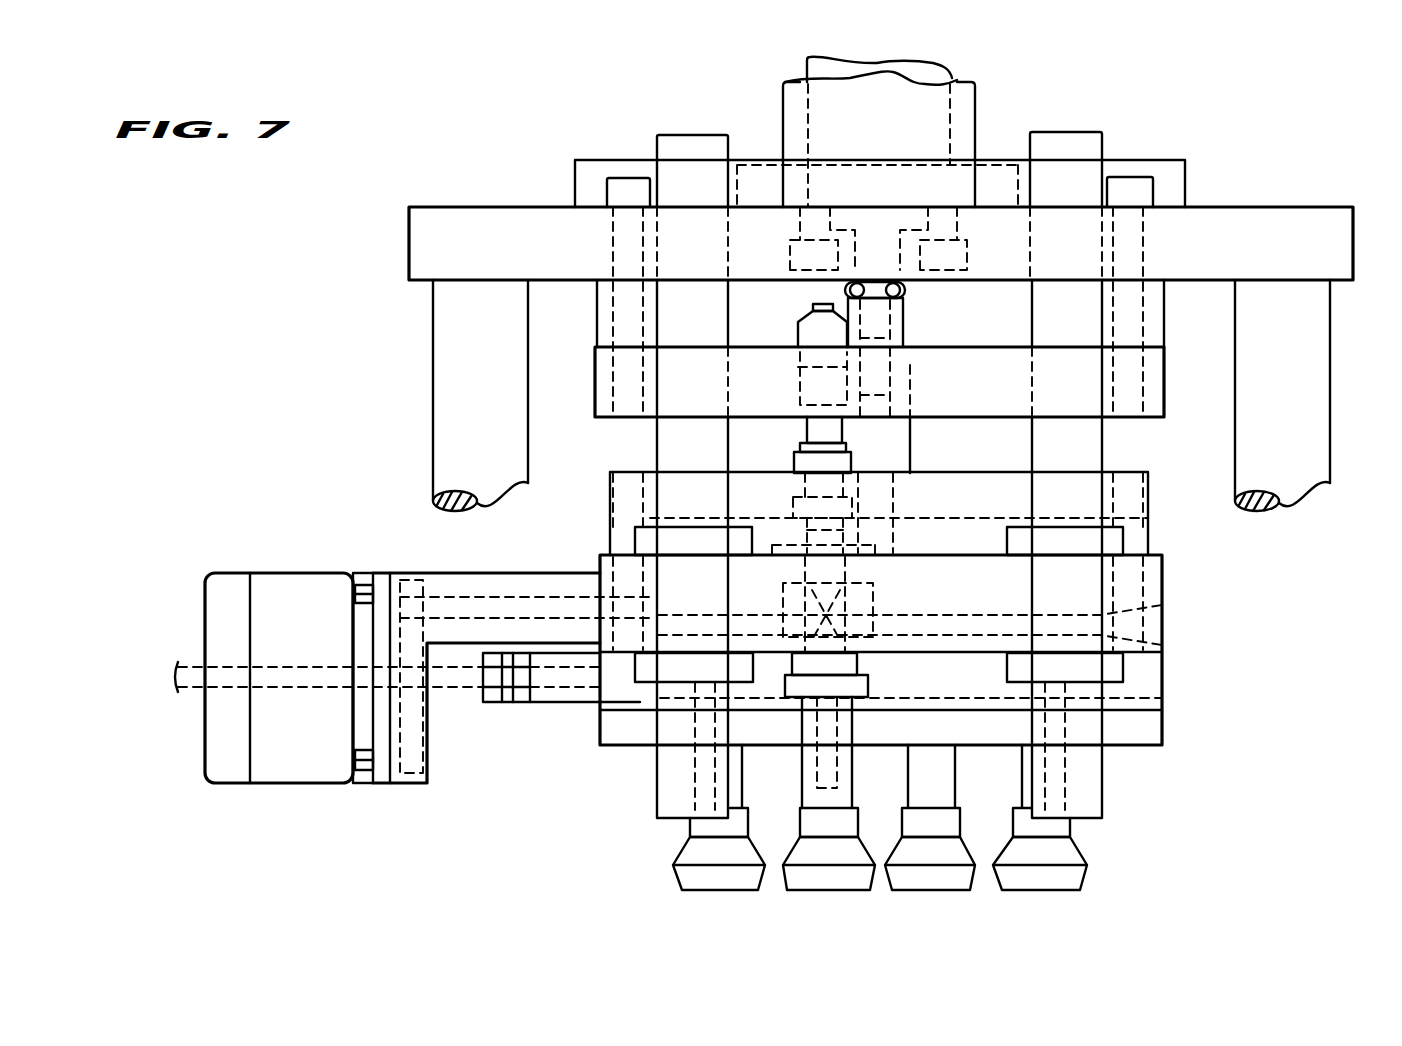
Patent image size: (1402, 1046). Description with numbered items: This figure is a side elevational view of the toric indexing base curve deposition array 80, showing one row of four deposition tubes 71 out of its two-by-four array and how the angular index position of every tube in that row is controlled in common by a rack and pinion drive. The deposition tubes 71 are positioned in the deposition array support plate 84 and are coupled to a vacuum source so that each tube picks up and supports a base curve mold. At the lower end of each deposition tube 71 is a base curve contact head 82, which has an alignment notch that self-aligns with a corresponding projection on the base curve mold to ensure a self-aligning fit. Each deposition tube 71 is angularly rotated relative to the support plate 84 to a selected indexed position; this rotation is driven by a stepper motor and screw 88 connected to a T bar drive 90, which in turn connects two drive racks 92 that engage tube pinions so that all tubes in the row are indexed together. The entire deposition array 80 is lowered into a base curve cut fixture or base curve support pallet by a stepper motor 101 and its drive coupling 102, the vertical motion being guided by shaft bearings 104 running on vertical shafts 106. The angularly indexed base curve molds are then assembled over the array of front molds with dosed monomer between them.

The deposition tube 71 is at (742, 762).
The toric indexing base curve deposition array 80 is at (627, 459).
The base curve contact head 82 is at (760, 886).
The deposition array support plate 84 is at (1168, 673).
The stepper motor and screw 88 is at (317, 580).
The T bar drive 90 is at (497, 652).
The drive rack 92 is at (578, 675).
The stepper motor 101 is at (957, 80).
The drive coupling 102 is at (888, 443).
The shaft bearing 104 is at (652, 685).
The vertical shaft 106 is at (706, 450).